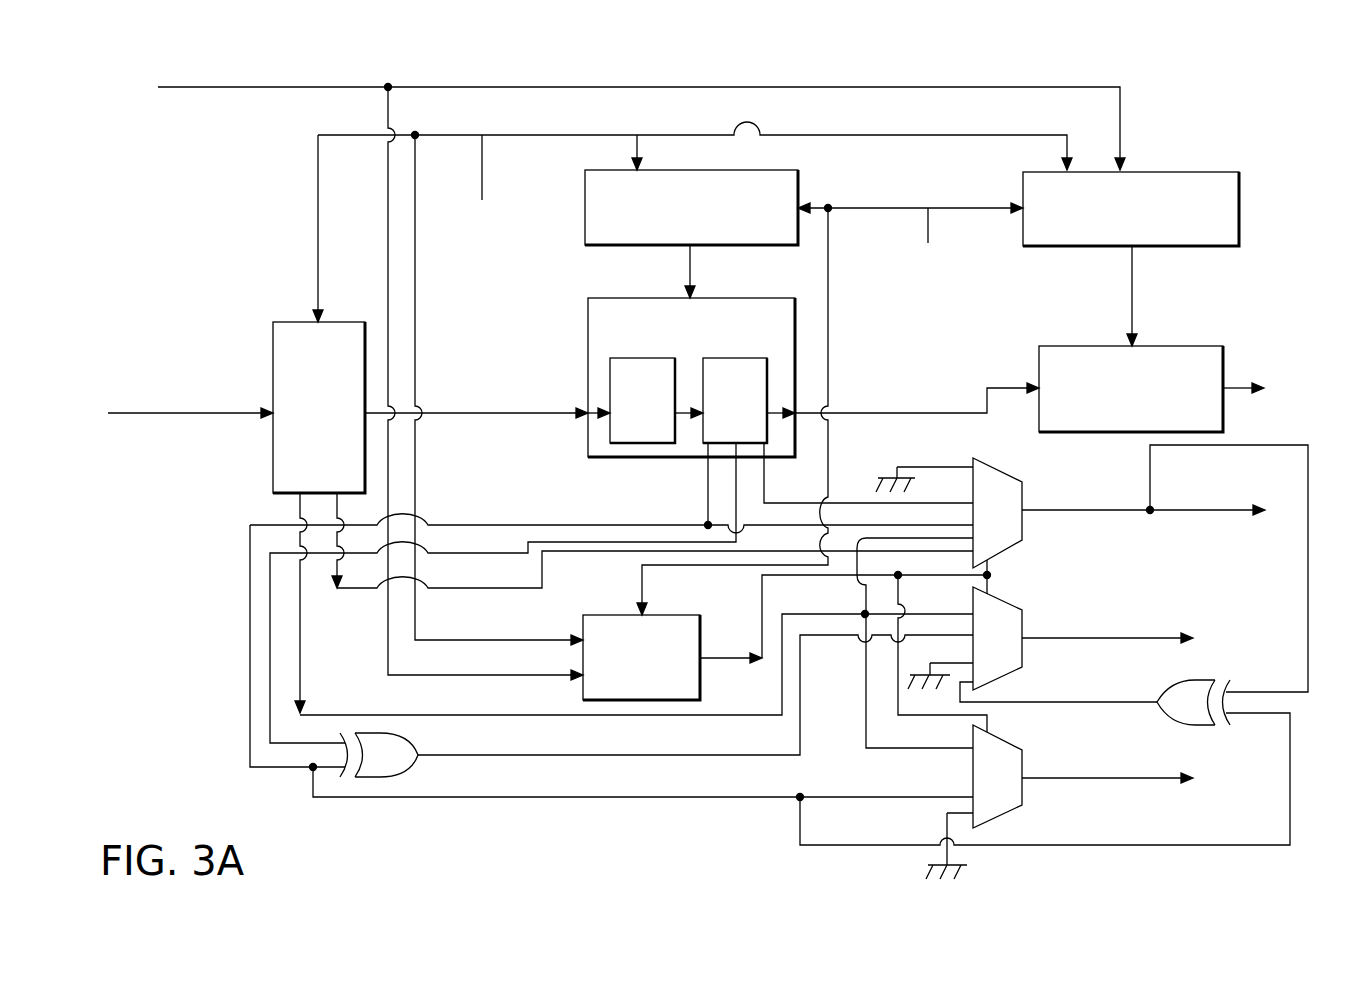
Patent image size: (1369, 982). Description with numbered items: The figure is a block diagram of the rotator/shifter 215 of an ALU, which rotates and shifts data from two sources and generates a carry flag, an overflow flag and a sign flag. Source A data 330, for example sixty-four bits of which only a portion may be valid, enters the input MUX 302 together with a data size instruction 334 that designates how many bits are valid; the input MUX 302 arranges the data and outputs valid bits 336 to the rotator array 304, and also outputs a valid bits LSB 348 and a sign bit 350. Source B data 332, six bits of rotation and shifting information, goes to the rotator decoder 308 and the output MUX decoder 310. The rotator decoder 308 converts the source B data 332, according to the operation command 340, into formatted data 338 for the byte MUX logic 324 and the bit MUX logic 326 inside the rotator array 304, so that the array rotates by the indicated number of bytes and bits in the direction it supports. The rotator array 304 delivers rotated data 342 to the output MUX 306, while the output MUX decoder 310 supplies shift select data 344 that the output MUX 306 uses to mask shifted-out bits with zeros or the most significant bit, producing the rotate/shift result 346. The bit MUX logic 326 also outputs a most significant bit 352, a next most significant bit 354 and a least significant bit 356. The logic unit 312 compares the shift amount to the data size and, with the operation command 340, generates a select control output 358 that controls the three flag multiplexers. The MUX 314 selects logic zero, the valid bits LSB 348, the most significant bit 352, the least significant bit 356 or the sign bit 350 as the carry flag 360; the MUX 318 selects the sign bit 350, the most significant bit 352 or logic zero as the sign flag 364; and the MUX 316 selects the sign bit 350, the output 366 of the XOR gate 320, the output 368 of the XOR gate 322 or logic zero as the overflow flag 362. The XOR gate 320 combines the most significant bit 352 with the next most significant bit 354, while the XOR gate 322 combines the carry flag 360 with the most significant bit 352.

The rotator/shifter 215 is at (1352, 96).
The input multiplexer 302 is at (290, 322).
The rotator array 304 is at (588, 318).
The output MUX 306 is at (1223, 350).
The rotator decoder 308 is at (733, 245).
The output MUX decoder 310 is at (1172, 246).
The logic unit 312 is at (605, 615).
The multiplexer 314 is at (1022, 540).
The multiplexer 316 is at (1022, 665).
The multiplexer 318 is at (1022, 805).
The XOR gate 320 is at (412, 742).
The XOR gate 322 is at (1185, 725).
The byte MUX logic 324 is at (610, 368).
The bit MUX logic 326 is at (748, 358).
The source A data 330 is at (233, 410).
The source B data 332 is at (178, 87).
The data size instruction 334 is at (448, 135).
The valid bits 336 is at (485, 416).
The formatted data 338 is at (690, 272).
The operation command 340 is at (928, 222).
The rotated data 342 is at (993, 388).
The shift select data 344 is at (1132, 288).
The rotate/shift result 346 is at (1235, 392).
The valid bits LSB 348 is at (565, 607).
The sign bit 350 is at (302, 625).
The most significant bit 352 is at (706, 518).
The MSB-1 354 is at (736, 490).
The LSB 356 is at (768, 462).
The select control output 358 is at (762, 648).
The carry flag 360 is at (1200, 495).
The overflow flag 362 is at (1130, 640).
The sign flag 364 is at (1145, 780).
The output of the XOR gate 366 is at (640, 752).
The output of the XOR gate 368 is at (1098, 703).